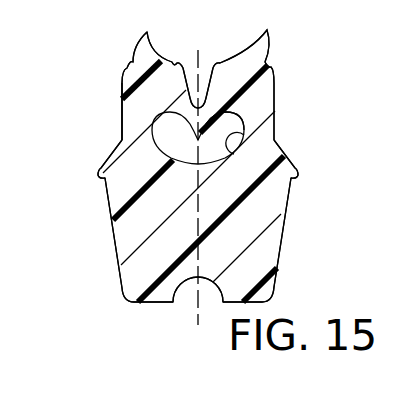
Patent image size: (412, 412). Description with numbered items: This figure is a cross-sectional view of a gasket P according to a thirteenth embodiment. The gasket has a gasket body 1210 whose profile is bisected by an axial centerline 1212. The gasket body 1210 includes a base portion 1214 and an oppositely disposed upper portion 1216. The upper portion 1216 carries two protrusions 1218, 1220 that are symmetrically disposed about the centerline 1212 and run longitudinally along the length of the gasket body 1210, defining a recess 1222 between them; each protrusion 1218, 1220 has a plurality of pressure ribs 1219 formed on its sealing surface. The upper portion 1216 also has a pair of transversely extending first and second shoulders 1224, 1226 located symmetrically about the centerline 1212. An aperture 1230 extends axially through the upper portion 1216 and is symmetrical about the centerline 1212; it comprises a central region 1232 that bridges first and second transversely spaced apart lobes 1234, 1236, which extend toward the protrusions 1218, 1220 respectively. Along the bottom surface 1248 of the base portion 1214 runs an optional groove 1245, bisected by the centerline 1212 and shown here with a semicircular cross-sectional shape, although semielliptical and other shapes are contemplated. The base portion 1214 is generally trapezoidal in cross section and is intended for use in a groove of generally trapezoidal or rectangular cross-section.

The gasket body 1210 is at (90, 219).
The axial centerline 1212 is at (197, 331).
The base portion 1214 is at (121, 262).
The upper portion 1216 is at (118, 139).
The protrusion 1218 is at (123, 84).
The pressure ribs 1219 is at (148, 32).
The protrusion 1220 is at (262, 89).
The recess 1222 is at (203, 90).
The first shoulder 1224 is at (100, 168).
The second shoulder 1226 is at (292, 174).
The aperture 1230 is at (234, 135).
The central region 1232 is at (205, 153).
The first lobe 1234 is at (157, 121).
The second lobe 1236 is at (230, 127).
The groove 1245 is at (187, 298).
The bottom surface 1248 is at (152, 303).
The gasket P is at (311, 241).